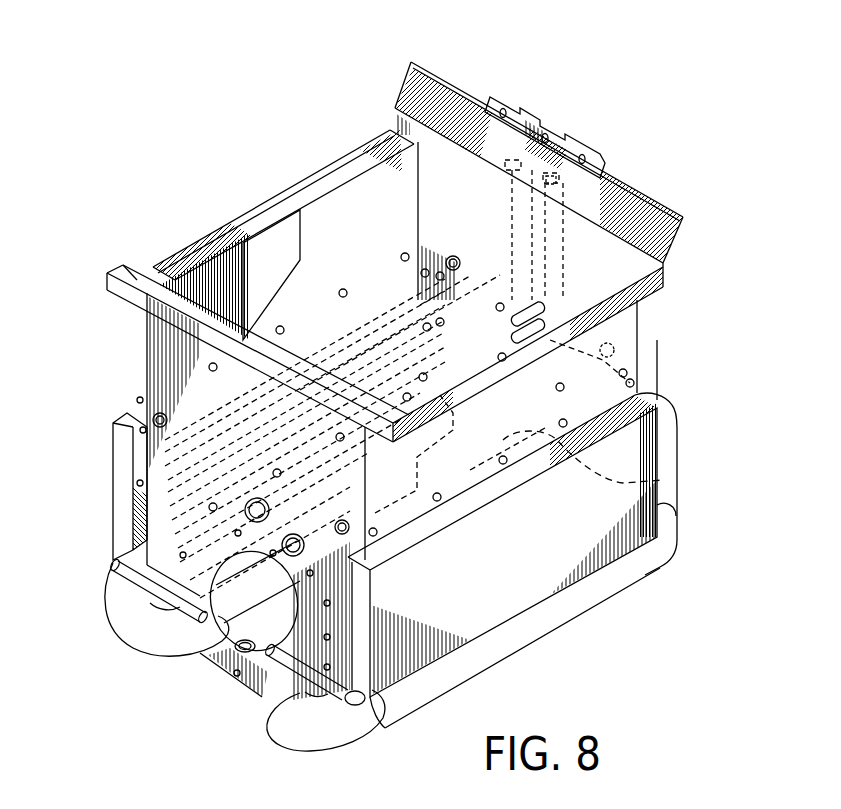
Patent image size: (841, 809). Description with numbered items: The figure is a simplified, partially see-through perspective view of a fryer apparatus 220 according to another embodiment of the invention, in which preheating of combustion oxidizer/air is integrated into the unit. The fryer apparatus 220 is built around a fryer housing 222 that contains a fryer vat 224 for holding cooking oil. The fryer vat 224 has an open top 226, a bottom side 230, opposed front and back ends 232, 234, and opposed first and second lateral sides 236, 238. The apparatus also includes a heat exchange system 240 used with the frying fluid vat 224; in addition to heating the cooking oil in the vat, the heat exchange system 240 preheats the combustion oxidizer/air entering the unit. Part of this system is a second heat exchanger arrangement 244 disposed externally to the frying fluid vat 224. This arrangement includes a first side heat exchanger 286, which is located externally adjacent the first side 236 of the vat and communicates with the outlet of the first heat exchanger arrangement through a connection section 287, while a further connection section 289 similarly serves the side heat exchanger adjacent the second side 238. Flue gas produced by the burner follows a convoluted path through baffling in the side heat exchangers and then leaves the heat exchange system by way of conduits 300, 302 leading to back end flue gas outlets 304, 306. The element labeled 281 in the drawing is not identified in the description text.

The fryer apparatus 220 is at (640, 80).
The fryer housing 222 is at (212, 220).
The fryer vat 224 is at (348, 367).
The open top 226 is at (345, 212).
The bottom side 230 is at (227, 693).
The front end 232 is at (173, 373).
The back end 234 is at (603, 260).
The first lateral side 236 is at (213, 292).
The second lateral side 238 is at (653, 483).
The heat exchange system 240 is at (450, 607).
The second heat exchanger arrangement 244 is at (607, 537).
The bottom tube 281 is at (548, 585).
The first side heat exchanger 286 is at (123, 493).
The connection section 287 is at (130, 630).
The connection section 289 is at (297, 727).
The conduit 300 is at (513, 213).
The conduit 302 is at (613, 180).
The back end flue gas outlet 304 is at (513, 163).
The back end flue gas outlet 306 is at (553, 172).